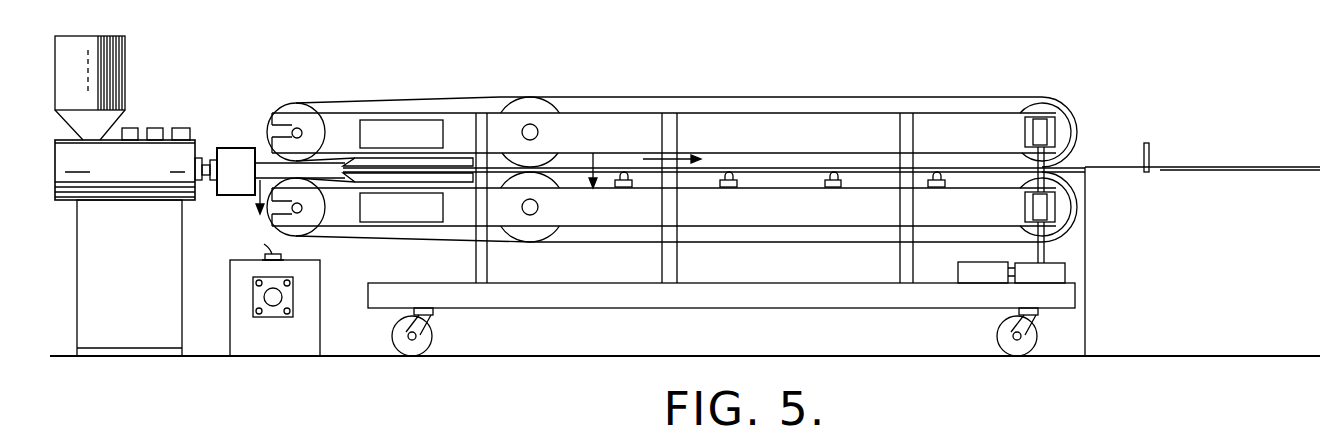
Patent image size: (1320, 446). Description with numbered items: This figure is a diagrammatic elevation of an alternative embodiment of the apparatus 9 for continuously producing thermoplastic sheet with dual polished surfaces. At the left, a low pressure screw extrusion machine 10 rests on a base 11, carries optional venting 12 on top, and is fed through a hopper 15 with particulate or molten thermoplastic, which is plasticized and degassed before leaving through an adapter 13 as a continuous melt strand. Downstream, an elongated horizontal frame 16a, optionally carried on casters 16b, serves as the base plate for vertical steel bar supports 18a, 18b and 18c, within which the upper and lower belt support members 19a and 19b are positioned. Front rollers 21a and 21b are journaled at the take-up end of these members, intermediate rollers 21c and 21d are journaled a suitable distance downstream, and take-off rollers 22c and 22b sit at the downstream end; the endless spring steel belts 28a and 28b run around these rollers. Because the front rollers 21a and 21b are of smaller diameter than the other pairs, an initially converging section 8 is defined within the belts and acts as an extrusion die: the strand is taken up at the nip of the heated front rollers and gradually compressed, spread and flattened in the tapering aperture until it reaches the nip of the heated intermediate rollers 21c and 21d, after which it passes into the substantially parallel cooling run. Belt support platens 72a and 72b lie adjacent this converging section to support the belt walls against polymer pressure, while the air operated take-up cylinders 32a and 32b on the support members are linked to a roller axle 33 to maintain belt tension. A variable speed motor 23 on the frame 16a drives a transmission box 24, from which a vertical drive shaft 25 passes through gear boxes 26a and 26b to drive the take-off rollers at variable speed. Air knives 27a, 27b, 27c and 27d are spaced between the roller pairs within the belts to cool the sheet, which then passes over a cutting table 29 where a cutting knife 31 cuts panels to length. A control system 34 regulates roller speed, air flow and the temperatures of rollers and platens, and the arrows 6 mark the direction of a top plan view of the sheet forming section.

The section view arrows 6 is at (469, 190).
The converging section 8 is at (338, 172).
The apparatus 9 is at (905, 66).
The plastic extrusion machine 10 is at (115, 172).
The base 11 is at (128, 288).
The venting 12 is at (180, 128).
The adapter 13 is at (238, 148).
The hopper 15 is at (115, 58).
The horizontal frame 16a is at (677, 305).
The casters 16b is at (437, 336).
The vertical steel bar support 18a is at (475, 252).
The vertical steel bar support 18b is at (662, 252).
The vertical steel bar support 18c is at (899, 252).
The upper belt support member 19a is at (697, 143).
The lower belt support member 19b is at (692, 218).
The front roller 21a is at (282, 110).
The front roller 21b is at (268, 228).
The intermediate roller 21c is at (534, 106).
The intermediate roller 21d is at (535, 240).
The take-off roller 22b is at (1080, 204).
The upper drive roller 22c is at (1048, 104).
The variable speed motor 23 is at (960, 268).
The transmission box 24 is at (1030, 268).
The drive shaft 25 is at (1045, 250).
The gear box 26a is at (1032, 131).
The gear box 26b is at (1032, 208).
The air knife 27a is at (615, 189).
The air knife 27b is at (740, 189).
The air knife 27c is at (841, 189).
The air knife 27d is at (936, 189).
The endless spring steel belt 28a is at (342, 98).
The endless spring steel belt 28b is at (380, 242).
The cutting table 29 is at (1256, 290).
The cutting knife 31 is at (1143, 154).
The take-up cylinder 32a is at (420, 145).
The take-up cylinder 32b is at (420, 218).
The roller axle 33 is at (296, 128).
The control system 34 is at (278, 346).
The belt support platen 72a is at (355, 157).
The belt support platen 72b is at (353, 186).